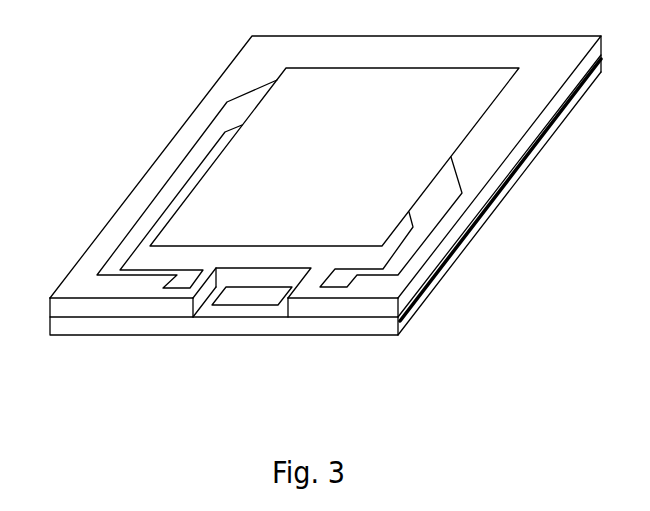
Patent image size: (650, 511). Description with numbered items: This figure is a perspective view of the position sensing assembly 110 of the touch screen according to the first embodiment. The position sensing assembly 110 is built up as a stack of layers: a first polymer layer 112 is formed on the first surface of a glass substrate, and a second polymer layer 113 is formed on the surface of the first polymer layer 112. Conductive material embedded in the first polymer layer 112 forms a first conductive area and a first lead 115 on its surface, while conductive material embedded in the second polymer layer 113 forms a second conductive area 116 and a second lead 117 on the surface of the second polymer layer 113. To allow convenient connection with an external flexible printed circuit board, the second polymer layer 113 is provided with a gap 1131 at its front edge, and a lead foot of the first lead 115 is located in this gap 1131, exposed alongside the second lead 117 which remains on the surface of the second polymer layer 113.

The position sensing assembly 110 is at (137, 108).
The first polymer layer 112 is at (426, 303).
The second polymer layer 113 is at (354, 301).
The gap 1131 is at (199, 300).
The first lead 115 is at (248, 293).
The second conductive area 116 is at (422, 152).
The second lead 117 is at (400, 245).